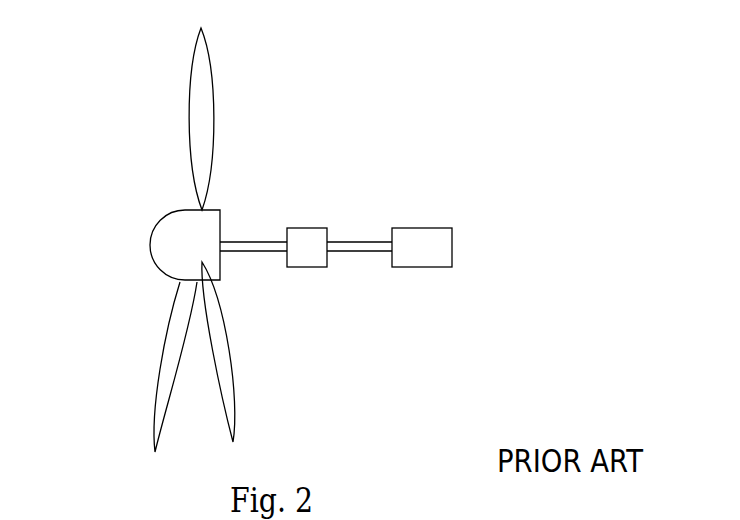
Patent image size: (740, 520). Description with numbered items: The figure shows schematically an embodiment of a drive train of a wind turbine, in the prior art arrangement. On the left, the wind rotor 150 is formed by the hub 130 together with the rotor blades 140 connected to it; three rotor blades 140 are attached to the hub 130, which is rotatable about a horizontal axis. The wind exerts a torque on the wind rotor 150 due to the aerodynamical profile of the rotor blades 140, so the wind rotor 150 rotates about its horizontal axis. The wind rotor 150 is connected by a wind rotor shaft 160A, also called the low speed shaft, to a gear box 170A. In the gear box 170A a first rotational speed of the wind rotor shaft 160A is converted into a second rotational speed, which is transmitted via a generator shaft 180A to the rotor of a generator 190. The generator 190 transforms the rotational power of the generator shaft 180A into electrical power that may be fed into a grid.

The hub 130 is at (158, 243).
The rotor blades 140 is at (190, 118).
The wind rotor 150 is at (144, 281).
The wind rotor shaft 160A is at (262, 251).
The gear box 170A is at (330, 237).
The generator shaft 180A is at (355, 249).
The generator 190 is at (415, 237).